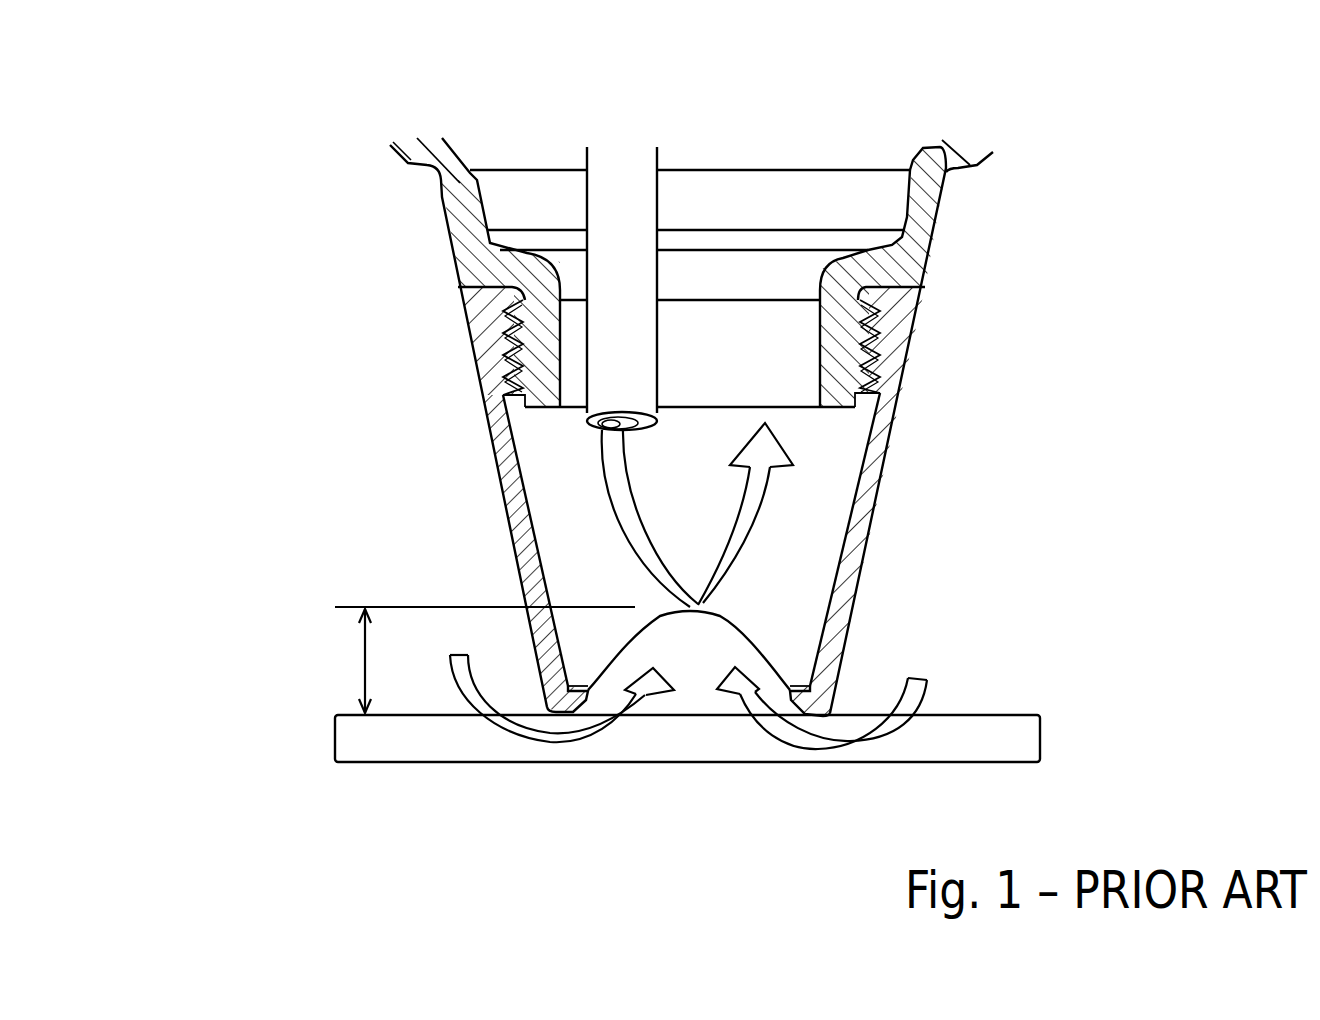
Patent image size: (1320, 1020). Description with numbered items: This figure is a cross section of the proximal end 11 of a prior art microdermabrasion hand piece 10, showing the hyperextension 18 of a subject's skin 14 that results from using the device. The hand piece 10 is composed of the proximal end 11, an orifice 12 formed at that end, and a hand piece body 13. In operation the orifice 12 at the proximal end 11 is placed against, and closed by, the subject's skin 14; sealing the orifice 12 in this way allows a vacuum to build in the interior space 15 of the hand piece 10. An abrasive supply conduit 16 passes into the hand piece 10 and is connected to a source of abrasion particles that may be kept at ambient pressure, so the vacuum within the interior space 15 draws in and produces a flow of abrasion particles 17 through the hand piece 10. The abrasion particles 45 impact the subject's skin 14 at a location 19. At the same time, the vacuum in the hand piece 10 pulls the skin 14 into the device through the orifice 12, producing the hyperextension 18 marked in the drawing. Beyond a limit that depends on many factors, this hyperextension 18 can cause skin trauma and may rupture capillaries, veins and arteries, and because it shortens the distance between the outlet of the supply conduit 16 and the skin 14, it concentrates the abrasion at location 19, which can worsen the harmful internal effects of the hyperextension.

The hand piece 10 is at (150, 404).
The proximal end 11 is at (463, 335).
The orifice 12 is at (812, 662).
The hand piece body 13 is at (938, 228).
The subject's skin 14 is at (1007, 717).
The interior space 15 is at (795, 213).
The abrasive supply conduit 16 is at (587, 157).
The flow of abrasion particles 17 is at (600, 463).
The hyperextension 18 is at (363, 657).
The location 19 is at (700, 604).
The abrasion particles 45 is at (630, 572).